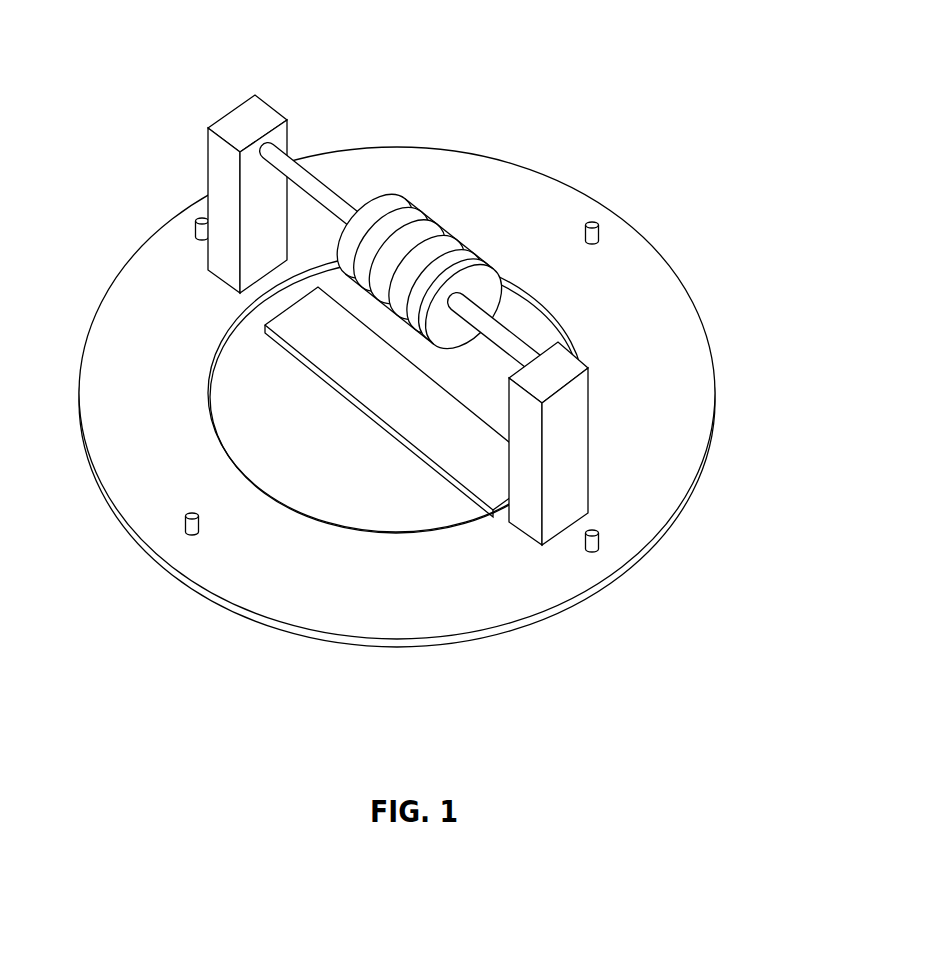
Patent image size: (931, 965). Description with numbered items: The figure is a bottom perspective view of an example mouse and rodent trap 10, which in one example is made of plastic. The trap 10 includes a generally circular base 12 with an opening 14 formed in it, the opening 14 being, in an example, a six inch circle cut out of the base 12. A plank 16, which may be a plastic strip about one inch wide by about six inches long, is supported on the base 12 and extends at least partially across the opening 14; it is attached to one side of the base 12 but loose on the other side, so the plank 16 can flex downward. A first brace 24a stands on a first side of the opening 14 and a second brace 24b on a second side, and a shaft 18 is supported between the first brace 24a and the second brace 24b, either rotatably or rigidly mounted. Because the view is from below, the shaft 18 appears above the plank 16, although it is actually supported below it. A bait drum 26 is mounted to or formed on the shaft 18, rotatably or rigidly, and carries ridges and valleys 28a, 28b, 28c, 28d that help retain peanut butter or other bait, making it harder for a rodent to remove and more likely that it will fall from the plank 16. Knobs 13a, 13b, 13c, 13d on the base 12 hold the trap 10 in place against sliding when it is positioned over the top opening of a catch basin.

The mouse and rodent trap 10 is at (403, 370).
The base 12 is at (693, 303).
The knob 13a is at (185, 526).
The knob 13b is at (197, 227).
The knob 13c is at (599, 233).
The knob 13d is at (600, 538).
The opening 14 is at (347, 467).
The plank 16 is at (303, 363).
The shaft 18 is at (424, 205).
The first brace 24a is at (588, 455).
The second brace 24b is at (208, 168).
The bait drum 26 is at (451, 201).
The ridges and valleys 28a is at (412, 203).
The ridges and valleys 28b is at (428, 217).
The ridges and valleys 28c is at (477, 259).
The ridges and valleys 28d is at (490, 268).